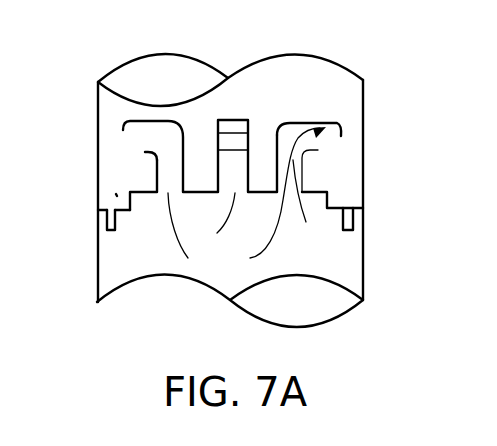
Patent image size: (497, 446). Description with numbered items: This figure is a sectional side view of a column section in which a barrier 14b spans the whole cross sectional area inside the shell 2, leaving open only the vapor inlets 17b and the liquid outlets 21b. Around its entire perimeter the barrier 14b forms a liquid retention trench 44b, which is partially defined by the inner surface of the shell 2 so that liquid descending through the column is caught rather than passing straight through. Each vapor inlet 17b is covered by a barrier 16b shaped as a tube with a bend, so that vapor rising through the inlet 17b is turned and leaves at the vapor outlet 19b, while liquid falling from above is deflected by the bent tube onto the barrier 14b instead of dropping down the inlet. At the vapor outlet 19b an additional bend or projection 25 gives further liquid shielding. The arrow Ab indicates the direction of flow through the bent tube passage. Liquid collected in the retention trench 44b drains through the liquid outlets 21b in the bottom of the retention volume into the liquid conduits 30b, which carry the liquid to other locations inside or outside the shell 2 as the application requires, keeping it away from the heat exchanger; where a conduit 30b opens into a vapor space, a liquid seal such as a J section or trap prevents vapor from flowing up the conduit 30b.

The shell 2 is at (365, 268).
The barrier 14b is at (313, 189).
The barrier 16b is at (308, 110).
The vapor inlets 17b is at (250, 258).
The vapor outlet 19b is at (132, 147).
The liquid outlets 21b is at (113, 203).
The bend or projection 25 is at (145, 152).
The liquid conduits 30b is at (112, 228).
The liquid retention trench 44b is at (117, 195).
The air flow direction Ab is at (288, 192).